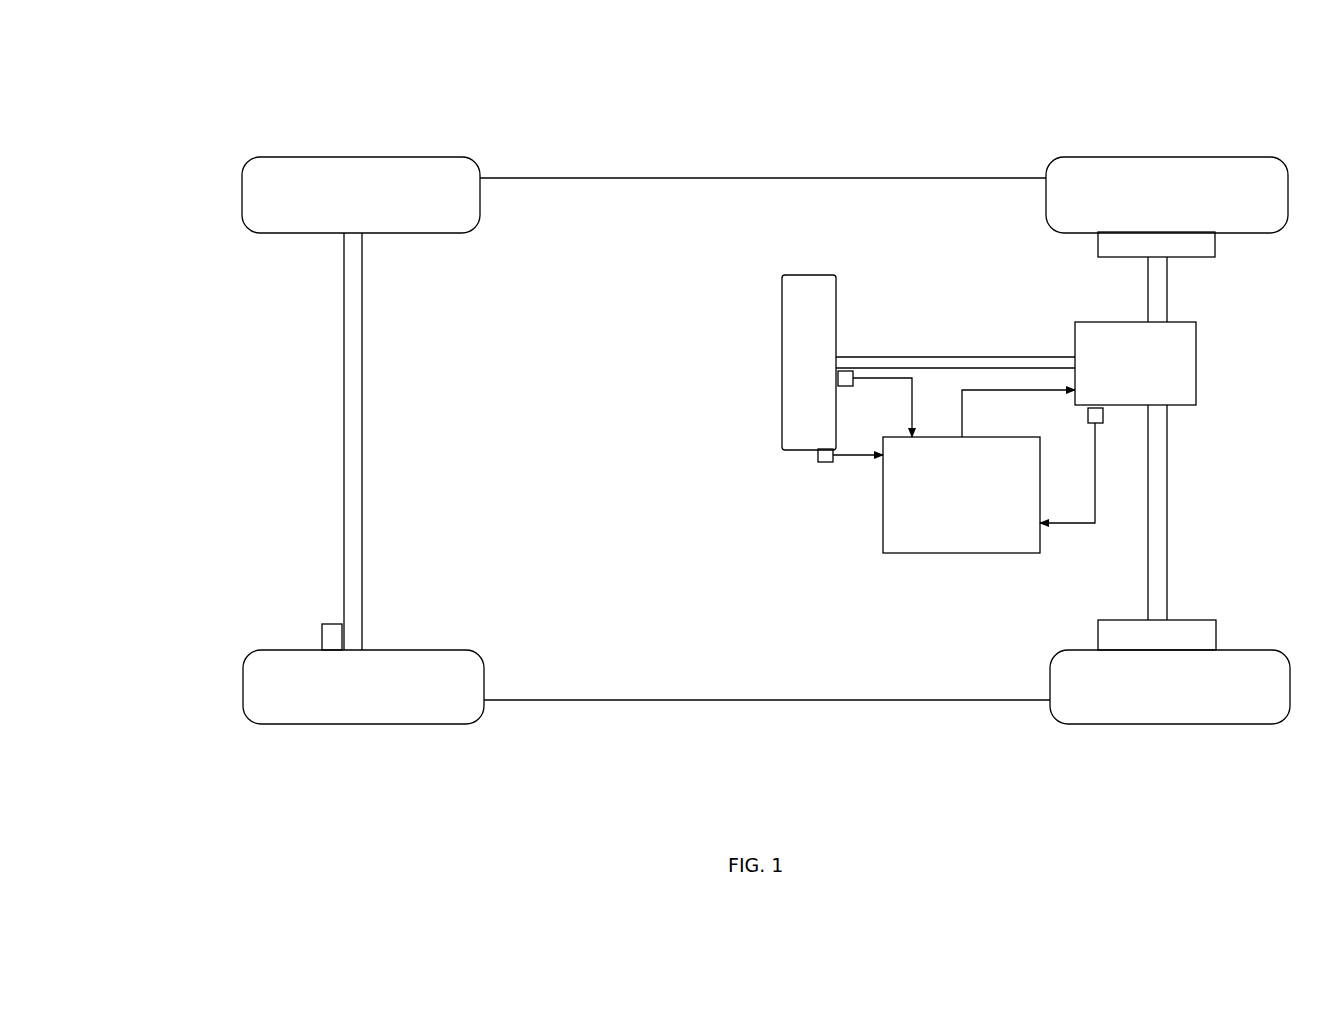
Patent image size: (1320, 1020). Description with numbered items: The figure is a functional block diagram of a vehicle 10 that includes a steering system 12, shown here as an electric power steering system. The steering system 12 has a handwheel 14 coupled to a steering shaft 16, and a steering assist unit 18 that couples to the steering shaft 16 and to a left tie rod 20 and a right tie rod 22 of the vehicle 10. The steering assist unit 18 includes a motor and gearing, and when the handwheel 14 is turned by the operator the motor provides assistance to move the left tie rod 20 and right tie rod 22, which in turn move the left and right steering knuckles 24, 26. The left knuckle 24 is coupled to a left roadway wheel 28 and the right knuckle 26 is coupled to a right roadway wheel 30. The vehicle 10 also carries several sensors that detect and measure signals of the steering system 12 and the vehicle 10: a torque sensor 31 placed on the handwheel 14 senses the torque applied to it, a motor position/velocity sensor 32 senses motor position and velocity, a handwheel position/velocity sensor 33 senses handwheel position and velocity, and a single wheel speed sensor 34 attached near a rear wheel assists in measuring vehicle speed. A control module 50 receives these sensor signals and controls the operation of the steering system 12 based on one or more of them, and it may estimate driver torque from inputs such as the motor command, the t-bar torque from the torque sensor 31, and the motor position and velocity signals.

The vehicle 10 is at (806, 75).
The steering system 12 is at (922, 252).
The handwheel 14 is at (808, 274).
The steering shaft 16 is at (927, 356).
The steering assist unit 18 is at (1197, 354).
The left tie rod 20 is at (1168, 300).
The right tie rod 22 is at (1168, 483).
The left steering knuckle 24 is at (1099, 240).
The right steering knuckle 26 is at (1128, 619).
The left roadway wheel 28 is at (1204, 156).
The right roadway wheel 30 is at (1222, 650).
The torque sensor 31 is at (846, 387).
The motor position/velocity sensor 32 is at (1104, 418).
The handwheel position/velocity sensor 33 is at (822, 465).
The wheel speed sensor 34 is at (322, 632).
The control module 50 is at (980, 436).